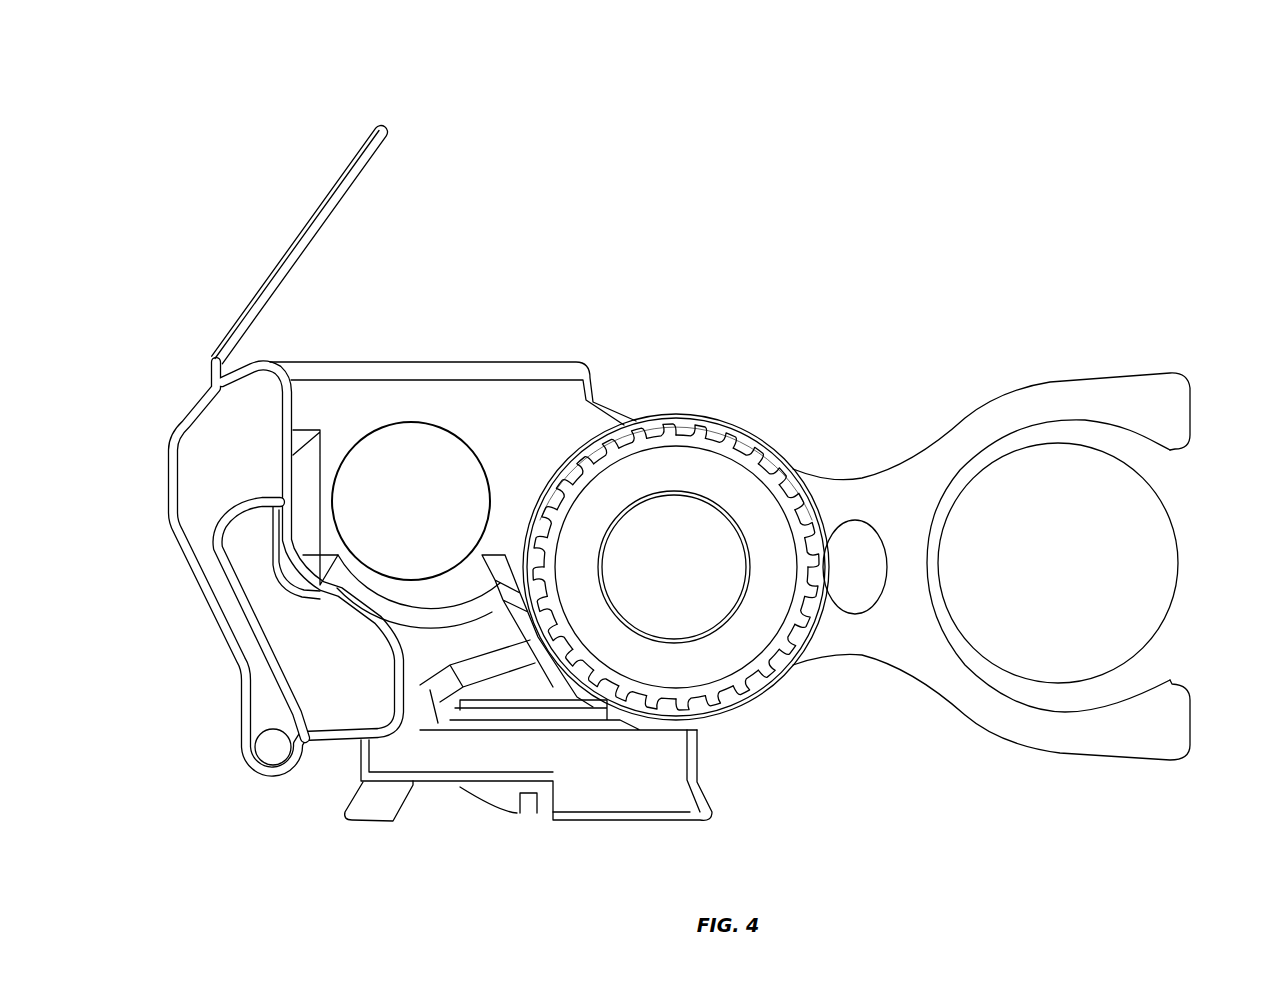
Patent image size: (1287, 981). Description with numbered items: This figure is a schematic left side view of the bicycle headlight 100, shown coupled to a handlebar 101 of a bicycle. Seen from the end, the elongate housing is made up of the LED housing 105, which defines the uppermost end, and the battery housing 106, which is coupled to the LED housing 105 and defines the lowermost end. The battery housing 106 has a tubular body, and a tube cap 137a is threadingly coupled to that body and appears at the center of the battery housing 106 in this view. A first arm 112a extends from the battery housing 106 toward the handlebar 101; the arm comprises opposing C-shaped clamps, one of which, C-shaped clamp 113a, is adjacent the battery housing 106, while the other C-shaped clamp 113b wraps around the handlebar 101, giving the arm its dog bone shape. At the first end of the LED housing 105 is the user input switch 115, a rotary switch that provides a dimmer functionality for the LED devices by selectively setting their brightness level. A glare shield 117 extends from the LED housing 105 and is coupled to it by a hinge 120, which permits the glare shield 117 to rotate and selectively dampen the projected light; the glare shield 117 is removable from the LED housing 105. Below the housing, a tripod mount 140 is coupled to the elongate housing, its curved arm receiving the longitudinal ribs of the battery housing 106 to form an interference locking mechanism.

The bicycle headlight 100 is at (931, 114).
The glare shield 117 is at (336, 228).
The LED housing 105 is at (394, 358).
The user input switch 115 is at (413, 455).
The battery housing 106 is at (632, 415).
The C-shaped clamp 113a is at (698, 414).
The tube cap 137a is at (730, 486).
The C-shaped clamp 113b is at (1110, 388).
The handlebar 101 is at (1162, 540).
The first arm 112a is at (990, 737).
The hinge 120 is at (269, 750).
The tripod mount 140 is at (437, 794).